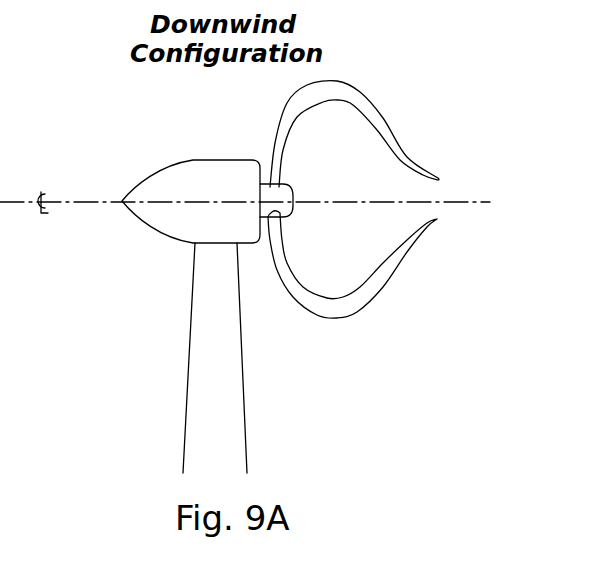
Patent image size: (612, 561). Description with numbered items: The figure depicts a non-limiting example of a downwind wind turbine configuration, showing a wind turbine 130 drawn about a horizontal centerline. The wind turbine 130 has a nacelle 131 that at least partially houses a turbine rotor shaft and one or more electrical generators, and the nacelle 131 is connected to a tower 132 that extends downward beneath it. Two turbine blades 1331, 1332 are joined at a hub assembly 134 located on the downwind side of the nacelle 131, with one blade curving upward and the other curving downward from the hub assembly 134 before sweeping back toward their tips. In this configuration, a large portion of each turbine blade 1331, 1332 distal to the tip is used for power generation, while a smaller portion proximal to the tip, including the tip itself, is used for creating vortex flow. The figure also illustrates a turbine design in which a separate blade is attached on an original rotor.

The wind turbine 130 is at (383, 187).
The nacelle 131 is at (212, 162).
The tower 132 is at (190, 330).
The turbine blade 1331 is at (384, 127).
The turbine blade 1332 is at (384, 270).
The hub assembly 134 is at (291, 195).